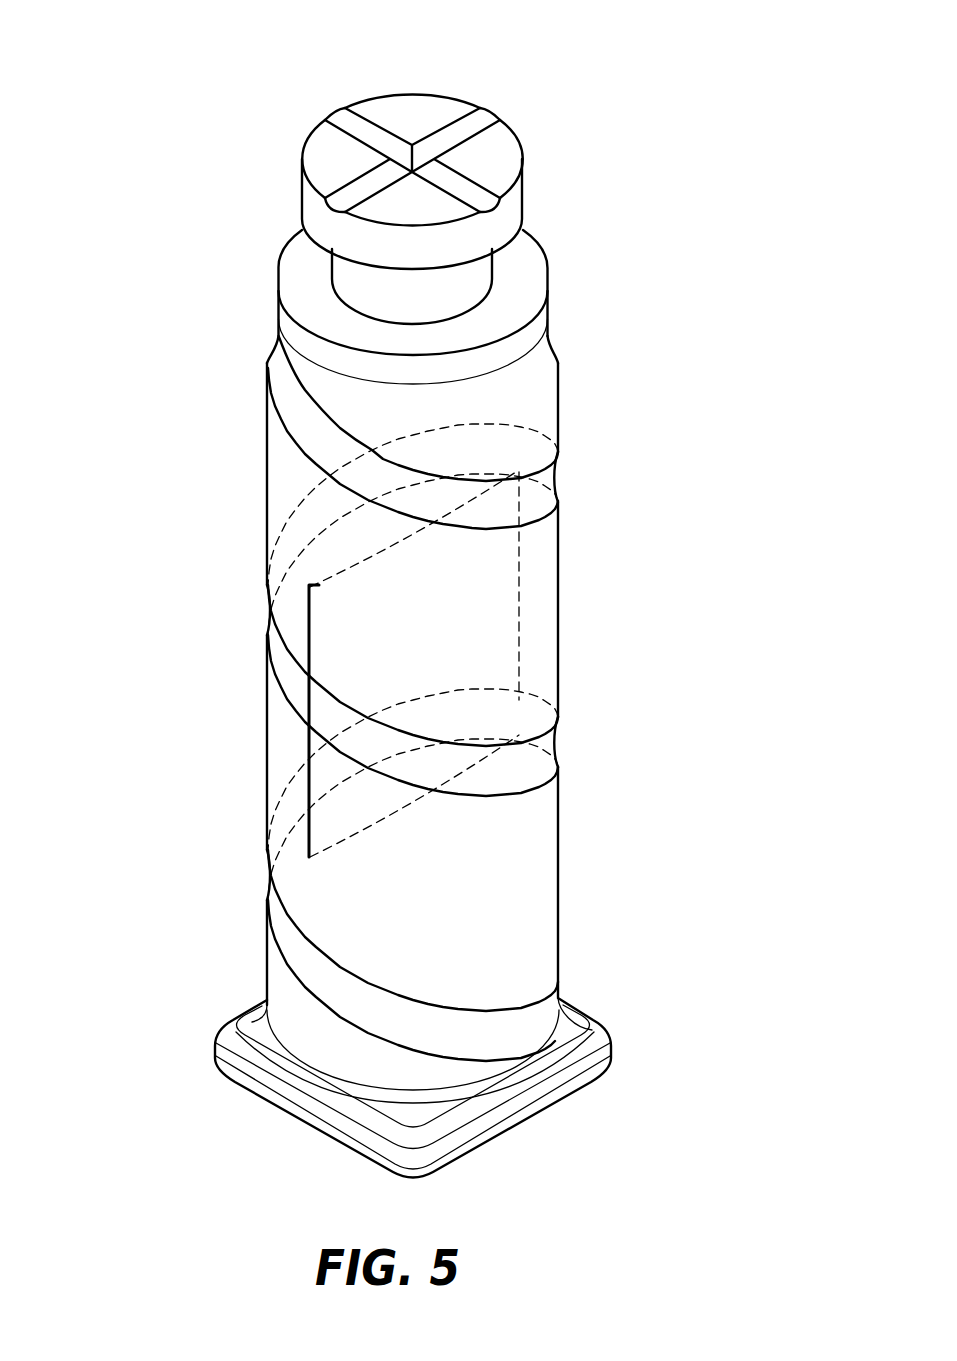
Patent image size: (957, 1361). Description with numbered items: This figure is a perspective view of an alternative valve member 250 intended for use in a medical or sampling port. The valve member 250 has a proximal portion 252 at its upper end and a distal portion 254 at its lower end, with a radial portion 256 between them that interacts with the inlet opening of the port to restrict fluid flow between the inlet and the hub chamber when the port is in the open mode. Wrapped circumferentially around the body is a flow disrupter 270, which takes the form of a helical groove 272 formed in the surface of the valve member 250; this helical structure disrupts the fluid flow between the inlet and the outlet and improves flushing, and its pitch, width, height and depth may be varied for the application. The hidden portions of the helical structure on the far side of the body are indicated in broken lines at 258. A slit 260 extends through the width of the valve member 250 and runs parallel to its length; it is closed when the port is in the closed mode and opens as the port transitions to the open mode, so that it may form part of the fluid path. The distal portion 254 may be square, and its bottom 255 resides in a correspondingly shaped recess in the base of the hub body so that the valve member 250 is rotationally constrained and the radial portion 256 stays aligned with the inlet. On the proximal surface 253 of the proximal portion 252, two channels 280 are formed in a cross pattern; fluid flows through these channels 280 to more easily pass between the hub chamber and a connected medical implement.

The valve member 250 is at (196, 116).
The proximal portion 252 is at (512, 205).
The proximal surface 253 is at (508, 147).
The distal portion 254 is at (500, 863).
The bottom 255 is at (300, 1112).
The radial portion 256 is at (277, 445).
The hidden helical groove portion 258 is at (287, 492).
The slit 260 is at (310, 603).
The flow disrupter 270 is at (277, 652).
The helical groove 272 is at (522, 767).
The channels 280 is at (448, 138).